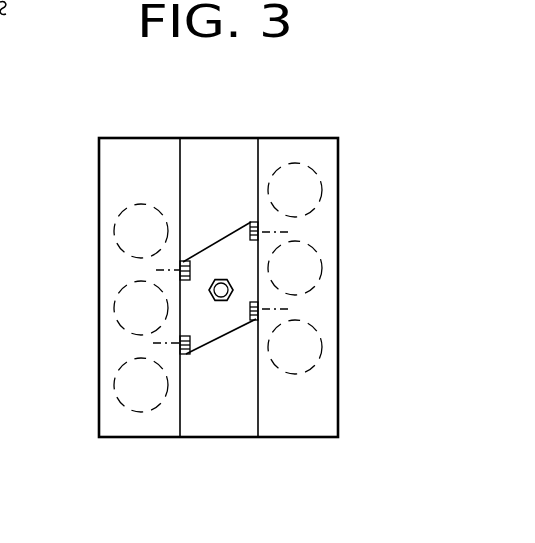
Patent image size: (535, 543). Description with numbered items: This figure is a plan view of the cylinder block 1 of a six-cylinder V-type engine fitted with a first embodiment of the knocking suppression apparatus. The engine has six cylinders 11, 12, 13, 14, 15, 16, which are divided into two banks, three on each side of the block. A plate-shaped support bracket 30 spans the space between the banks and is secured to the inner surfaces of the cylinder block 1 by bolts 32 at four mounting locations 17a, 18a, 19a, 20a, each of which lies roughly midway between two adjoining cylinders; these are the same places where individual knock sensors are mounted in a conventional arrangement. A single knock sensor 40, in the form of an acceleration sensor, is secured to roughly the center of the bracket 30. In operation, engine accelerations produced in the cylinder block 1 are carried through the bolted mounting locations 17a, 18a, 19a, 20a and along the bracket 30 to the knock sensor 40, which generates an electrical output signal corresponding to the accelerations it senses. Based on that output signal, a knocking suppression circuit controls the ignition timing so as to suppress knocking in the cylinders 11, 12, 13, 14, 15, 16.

The cylinder block 1 is at (164, 138).
The cylinder 11 is at (322, 190).
The cylinder 12 is at (114, 232).
The cylinder 13 is at (322, 268).
The cylinder 14 is at (114, 310).
The cylinder 15 is at (322, 347).
The cylinder 16 is at (115, 385).
The mounting location 17a is at (262, 237).
The mounting location 18a is at (262, 314).
The mounting location 19a is at (157, 270).
The mounting location 20a is at (175, 355).
The support bracket 30 is at (224, 252).
The bolt 32 is at (250, 228).
The knock sensor 40 is at (219, 302).